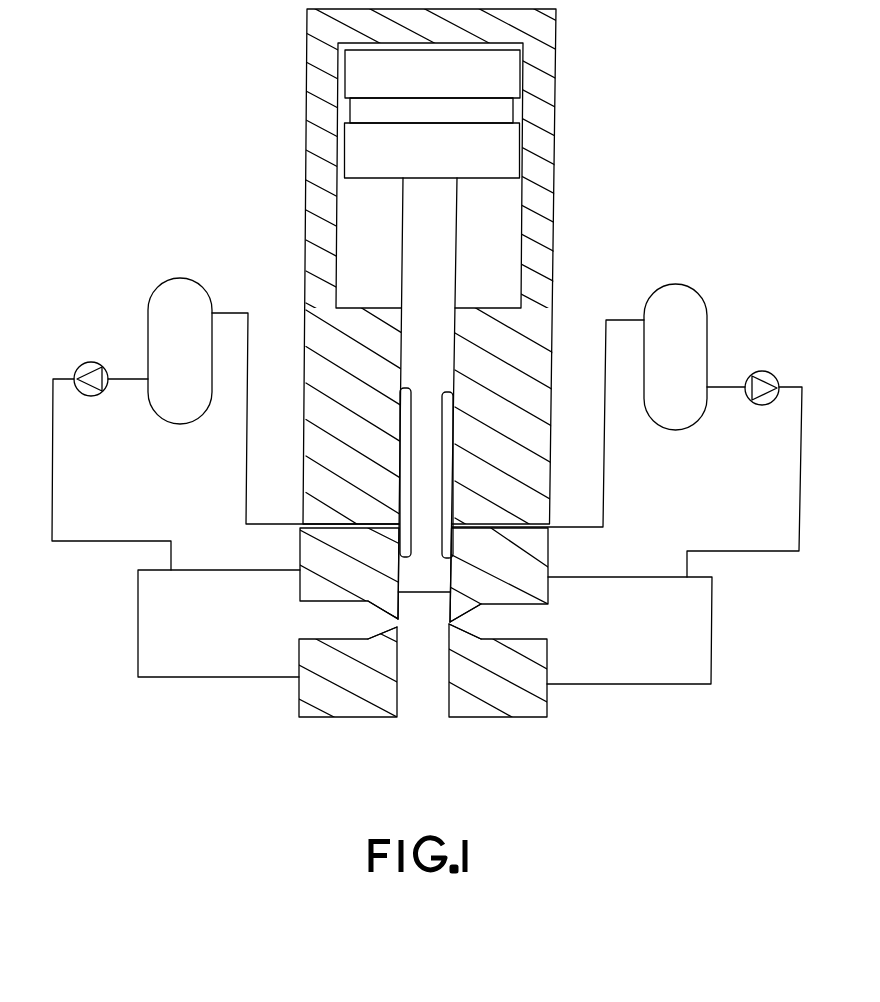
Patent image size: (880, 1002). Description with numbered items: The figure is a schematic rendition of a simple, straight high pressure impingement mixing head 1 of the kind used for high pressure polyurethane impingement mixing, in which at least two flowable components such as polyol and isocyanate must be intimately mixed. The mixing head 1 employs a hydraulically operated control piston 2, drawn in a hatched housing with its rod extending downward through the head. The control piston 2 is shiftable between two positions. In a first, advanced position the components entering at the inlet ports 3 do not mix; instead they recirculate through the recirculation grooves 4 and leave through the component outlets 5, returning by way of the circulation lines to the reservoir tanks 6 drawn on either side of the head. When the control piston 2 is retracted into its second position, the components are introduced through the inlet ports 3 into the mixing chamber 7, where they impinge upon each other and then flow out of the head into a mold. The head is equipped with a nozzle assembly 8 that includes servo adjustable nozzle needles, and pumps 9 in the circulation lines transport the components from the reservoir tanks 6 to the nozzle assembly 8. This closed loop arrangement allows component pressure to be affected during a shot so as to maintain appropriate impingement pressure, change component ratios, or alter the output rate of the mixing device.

The impingement mixing head 1 is at (555, 120).
The control piston 2 is at (444, 290).
The inlet ports 3 is at (450, 622).
The recirculation grooves 4 is at (400, 462).
The component outlets 5 is at (349, 529).
The reservoir tanks 6 is at (155, 388).
The mixing chamber 7 is at (425, 708).
The nozzle assembly 8 is at (175, 668).
The pumps 9 is at (82, 360).